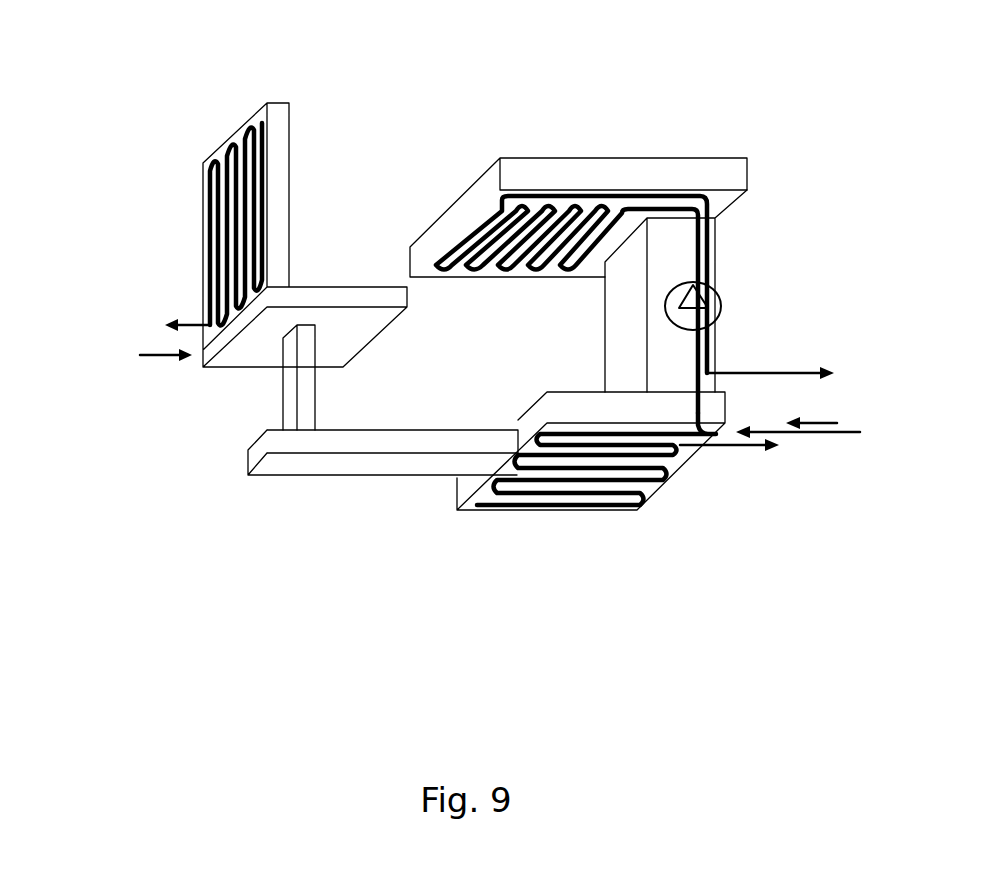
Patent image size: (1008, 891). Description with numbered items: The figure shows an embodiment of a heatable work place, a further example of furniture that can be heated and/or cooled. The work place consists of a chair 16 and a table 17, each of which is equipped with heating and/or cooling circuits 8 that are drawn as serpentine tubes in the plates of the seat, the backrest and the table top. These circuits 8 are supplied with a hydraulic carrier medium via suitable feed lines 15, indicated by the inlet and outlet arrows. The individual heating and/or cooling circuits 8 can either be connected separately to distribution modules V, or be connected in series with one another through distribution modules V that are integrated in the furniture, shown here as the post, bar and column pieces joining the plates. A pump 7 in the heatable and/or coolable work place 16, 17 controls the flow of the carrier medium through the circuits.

The pump 7 is at (712, 307).
The heating and/or cooling circuit 8 is at (207, 185).
The feed line 15 is at (494, 385).
The chair 16 is at (283, 188).
The table 17 is at (635, 170).
The distribution module V is at (290, 397).